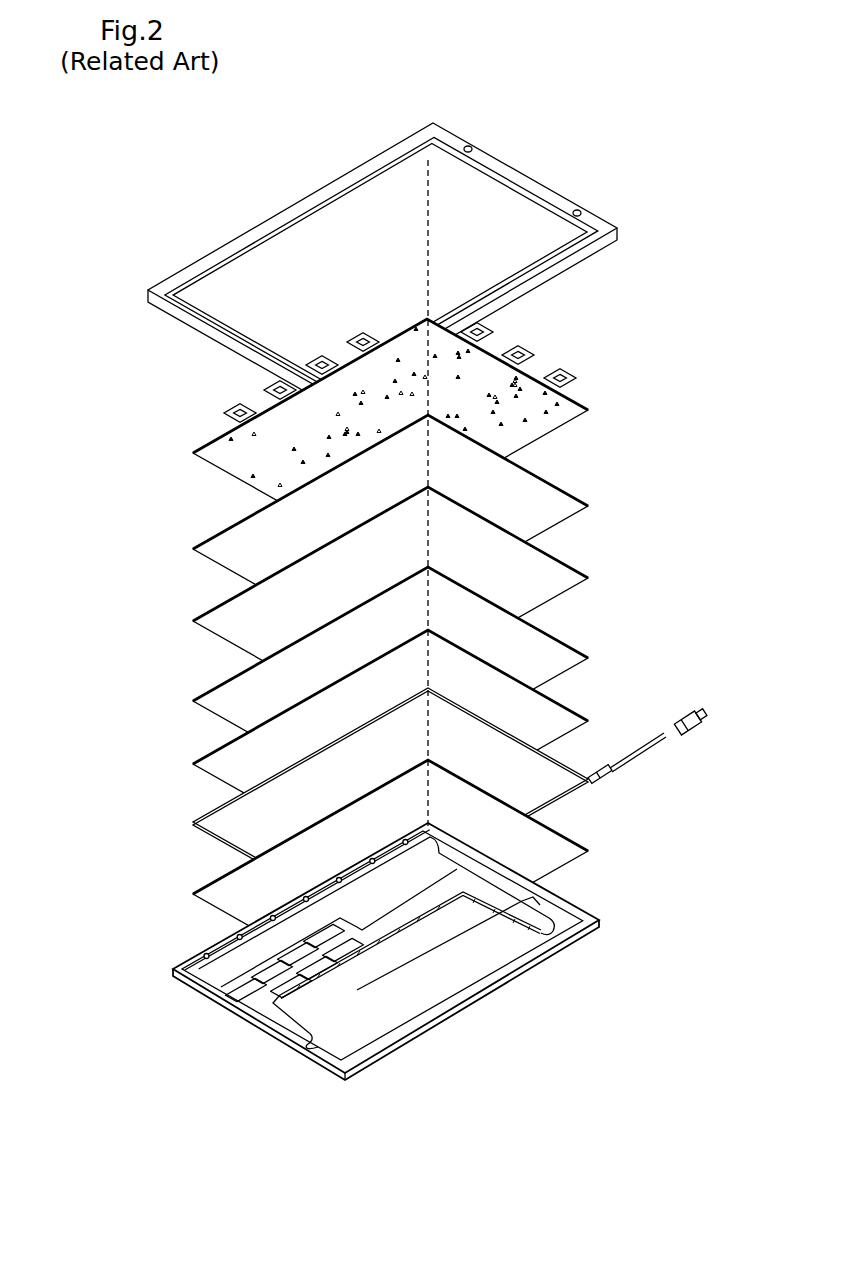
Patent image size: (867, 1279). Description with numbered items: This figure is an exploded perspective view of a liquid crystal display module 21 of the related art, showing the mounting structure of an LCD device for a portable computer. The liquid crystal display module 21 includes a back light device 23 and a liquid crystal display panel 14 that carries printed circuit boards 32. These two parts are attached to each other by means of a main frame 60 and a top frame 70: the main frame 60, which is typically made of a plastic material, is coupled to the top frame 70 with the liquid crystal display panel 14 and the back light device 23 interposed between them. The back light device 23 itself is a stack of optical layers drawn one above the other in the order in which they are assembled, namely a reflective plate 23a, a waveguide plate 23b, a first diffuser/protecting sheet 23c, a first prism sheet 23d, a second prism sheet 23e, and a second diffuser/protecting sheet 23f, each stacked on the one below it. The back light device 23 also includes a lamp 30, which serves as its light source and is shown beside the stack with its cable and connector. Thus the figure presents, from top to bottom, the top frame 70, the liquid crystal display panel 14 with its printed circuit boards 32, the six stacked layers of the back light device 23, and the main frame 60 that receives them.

The liquid crystal display module 21 is at (408, 599).
The top frame 70 is at (508, 160).
The liquid crystal display panel 14 is at (562, 419).
The printed circuit boards 32 is at (566, 378).
The back light device 23 is at (306, 700).
The reflective plate 23a is at (343, 872).
The waveguide plate 23b is at (215, 812).
The first diffuser/protecting sheet 23c is at (215, 754).
The first prism sheet 23d is at (225, 685).
The second prism sheet 23e is at (220, 608).
The second diffuser/protecting sheet 23f is at (233, 530).
The lamp 30 is at (612, 776).
The main frame 60 is at (252, 1058).